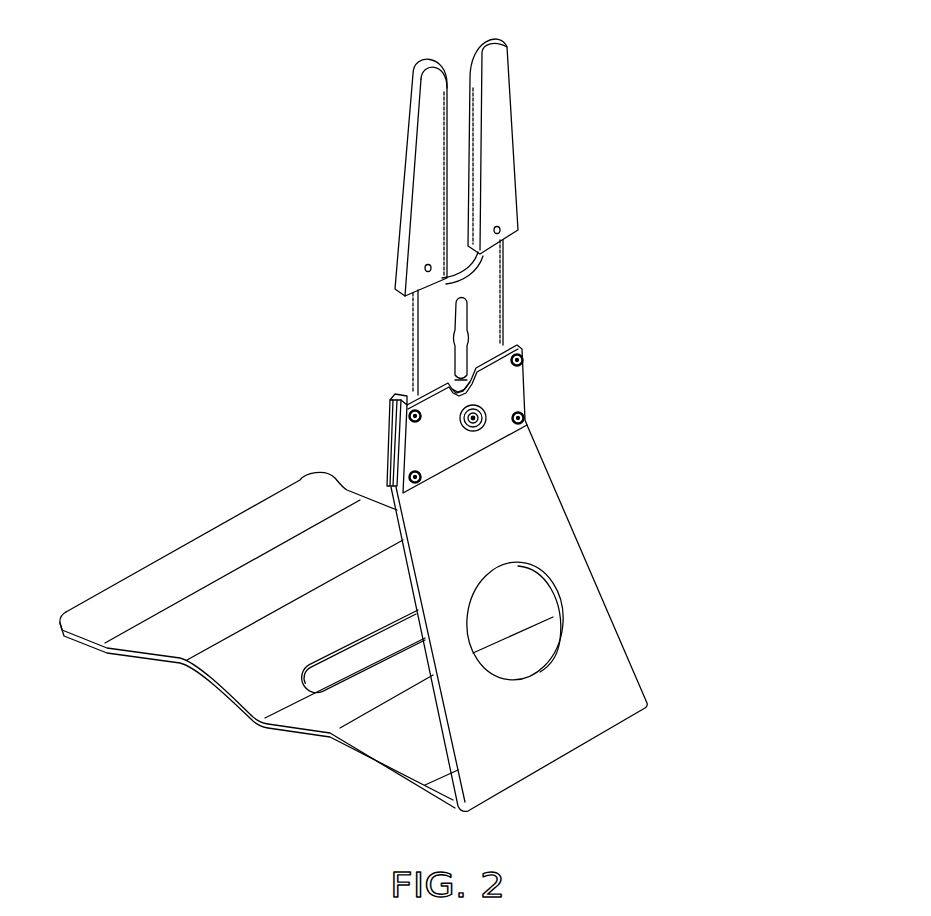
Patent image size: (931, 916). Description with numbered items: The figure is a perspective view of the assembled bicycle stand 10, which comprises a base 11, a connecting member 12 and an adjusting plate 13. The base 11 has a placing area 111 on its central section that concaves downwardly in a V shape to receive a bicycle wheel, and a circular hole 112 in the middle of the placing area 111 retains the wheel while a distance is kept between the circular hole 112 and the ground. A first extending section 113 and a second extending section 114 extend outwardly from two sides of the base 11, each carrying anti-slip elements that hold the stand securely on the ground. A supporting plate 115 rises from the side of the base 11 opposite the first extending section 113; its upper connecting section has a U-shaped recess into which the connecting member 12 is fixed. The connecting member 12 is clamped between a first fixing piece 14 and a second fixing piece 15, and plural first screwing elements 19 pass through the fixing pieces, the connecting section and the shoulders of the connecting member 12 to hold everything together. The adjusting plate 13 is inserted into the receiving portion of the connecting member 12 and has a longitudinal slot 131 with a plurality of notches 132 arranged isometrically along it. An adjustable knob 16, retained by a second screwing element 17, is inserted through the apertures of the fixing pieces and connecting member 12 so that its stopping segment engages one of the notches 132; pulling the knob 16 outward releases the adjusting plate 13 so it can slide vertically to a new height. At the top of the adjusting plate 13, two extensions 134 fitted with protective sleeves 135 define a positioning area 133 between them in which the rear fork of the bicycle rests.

The bicycle stand 10 is at (578, 291).
The base 11 is at (220, 528).
The placing area 111 is at (255, 697).
The circular hole 112 is at (368, 653).
The first extending section 113 is at (93, 632).
The second extending section 114 is at (447, 792).
The supporting plate 115 is at (535, 518).
The connecting member 12 is at (397, 391).
The adjusting plate 13 is at (487, 298).
The longitudinal slot 131 is at (463, 352).
The notches 132 is at (470, 372).
The positioning area 133 is at (458, 110).
The extensions 134 is at (503, 178).
The protective sleeves 135 is at (421, 177).
The first fixing piece 14 is at (507, 397).
The second fixing piece 15 is at (405, 393).
The adjustable knob 16 is at (460, 433).
The second screwing element 17 is at (480, 428).
The first screwing elements 19 is at (415, 483).